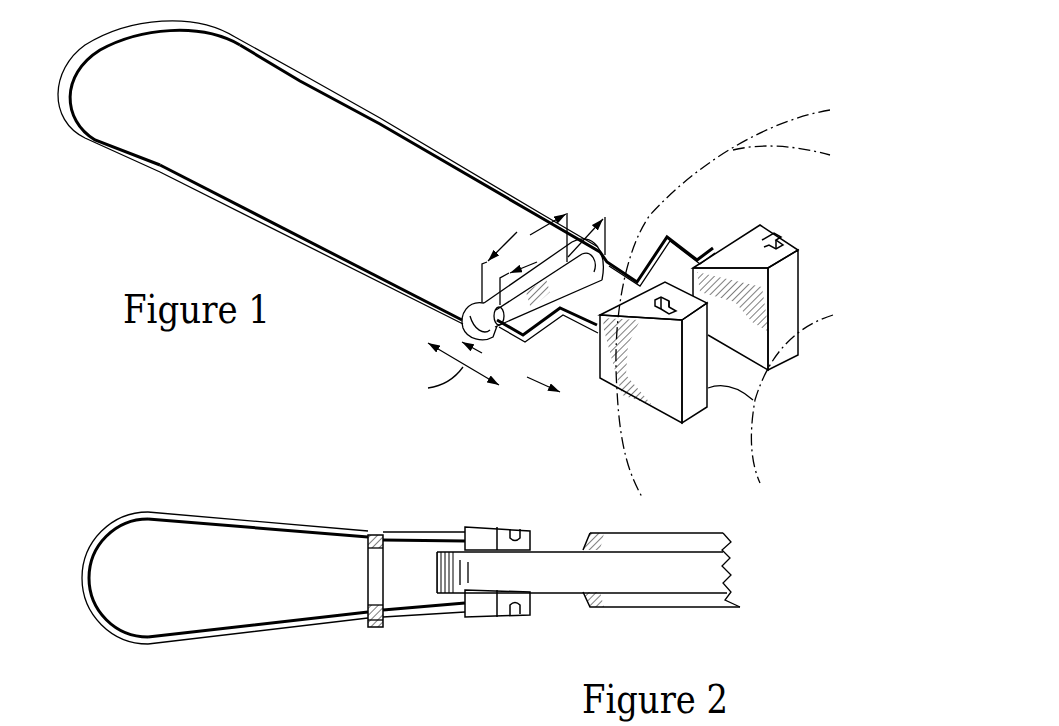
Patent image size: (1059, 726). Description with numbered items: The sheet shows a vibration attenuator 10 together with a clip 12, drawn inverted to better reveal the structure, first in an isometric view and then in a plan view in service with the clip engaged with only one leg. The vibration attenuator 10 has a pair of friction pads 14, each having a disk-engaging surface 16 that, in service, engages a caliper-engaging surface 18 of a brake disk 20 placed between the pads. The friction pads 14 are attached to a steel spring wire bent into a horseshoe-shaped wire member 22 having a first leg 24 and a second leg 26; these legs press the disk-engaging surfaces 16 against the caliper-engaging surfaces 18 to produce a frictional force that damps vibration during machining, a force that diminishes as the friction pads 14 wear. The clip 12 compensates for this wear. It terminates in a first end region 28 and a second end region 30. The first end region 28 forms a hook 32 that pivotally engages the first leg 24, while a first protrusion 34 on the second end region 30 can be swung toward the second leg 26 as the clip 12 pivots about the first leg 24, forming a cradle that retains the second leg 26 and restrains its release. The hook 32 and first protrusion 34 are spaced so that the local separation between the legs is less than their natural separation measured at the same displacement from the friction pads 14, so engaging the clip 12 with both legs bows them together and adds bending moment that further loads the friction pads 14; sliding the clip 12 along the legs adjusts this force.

In FIG. 1, the vibration attenuator 10 is at (505, 110).
In FIG. 2, the vibration attenuator 10 is at (155, 497).
In FIG. 1, the clip 12 is at (462, 272).
In FIG. 2, the clip 12 is at (388, 640).
In FIG. 1, the friction pads 14 is at (672, 413).
In FIG. 2, the friction pads 14 is at (482, 592).
In FIG. 1, the disk-engaging surface 16 is at (733, 325).
In FIG. 1, the caliper-engaging surfaces 18 is at (707, 202).
In FIG. 2, the caliper-engaging surfaces 18 is at (551, 551).
In FIG. 1, the brake disk 20 is at (765, 130).
In FIG. 2, the brake disk 20 is at (730, 532).
In FIG. 1, the horseshoe-shaped wire member 22 is at (213, 208).
In FIG. 2, the horseshoe-shaped wire member 22 is at (152, 647).
In FIG. 1, the first leg 24 is at (373, 273).
In FIG. 2, the first leg 24 is at (300, 625).
In FIG. 1, the second leg 26 is at (500, 198).
In FIG. 2, the second leg 26 is at (298, 525).
In FIG. 1, the first end region 28 is at (476, 326).
In FIG. 2, the first end region 28 is at (370, 632).
In FIG. 1, the second end region 30 is at (617, 262).
In FIG. 2, the second end region 30 is at (368, 535).
In FIG. 1, the hook 32 is at (470, 297).
In FIG. 2, the hook 32 is at (385, 615).
In FIG. 1, the first protrusion 34 is at (600, 243).
In FIG. 2, the first protrusion 34 is at (385, 541).